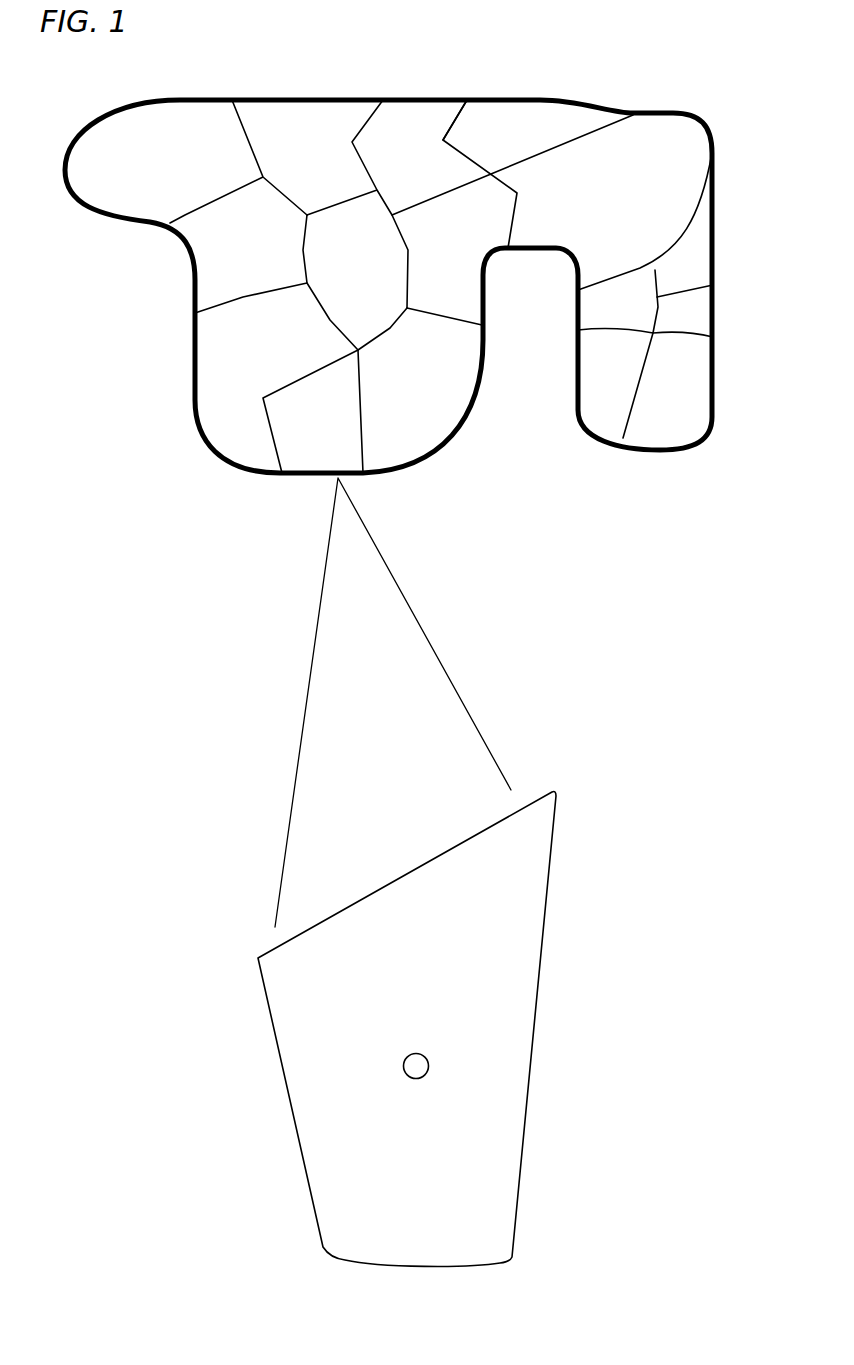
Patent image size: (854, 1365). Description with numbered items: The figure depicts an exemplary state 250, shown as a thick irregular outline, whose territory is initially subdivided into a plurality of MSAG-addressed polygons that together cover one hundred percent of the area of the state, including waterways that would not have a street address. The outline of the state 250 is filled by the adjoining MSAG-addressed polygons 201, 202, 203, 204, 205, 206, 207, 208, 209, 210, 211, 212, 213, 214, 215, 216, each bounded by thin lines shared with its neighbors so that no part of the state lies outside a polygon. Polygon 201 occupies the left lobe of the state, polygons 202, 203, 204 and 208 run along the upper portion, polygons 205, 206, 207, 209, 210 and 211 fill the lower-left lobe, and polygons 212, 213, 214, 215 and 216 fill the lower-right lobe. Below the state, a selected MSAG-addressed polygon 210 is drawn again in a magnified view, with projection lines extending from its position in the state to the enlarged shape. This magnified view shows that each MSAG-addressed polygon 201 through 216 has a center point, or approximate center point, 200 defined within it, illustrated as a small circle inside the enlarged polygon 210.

The state 250 is at (598, 108).
The MSAG-addressed polygon 201 is at (183, 182).
The MSAG-addressed polygon 202 is at (323, 173).
The MSAG-addressed polygon 203 is at (420, 173).
The MSAG-addressed polygon 204 is at (507, 152).
The MSAG-addressed polygon 205 is at (262, 262).
The MSAG-addressed polygon 206 is at (368, 285).
The MSAG-addressed polygon 207 is at (470, 250).
The MSAG-addressed polygon 208 is at (598, 222).
The MSAG-addressed polygon 209 is at (278, 352).
The selected MSAG-addressed polygon 210 is at (335, 413).
The MSAG-addressed polygon 211 is at (420, 387).
The MSAG-addressed polygon 212 is at (632, 318).
The MSAG-addressed polygon 213 is at (697, 282).
The MSAG-addressed polygon 214 is at (697, 325).
The MSAG-addressed polygon 215 is at (625, 375).
The MSAG-addressed polygon 216 is at (680, 403).
The center point 200 is at (430, 1067).